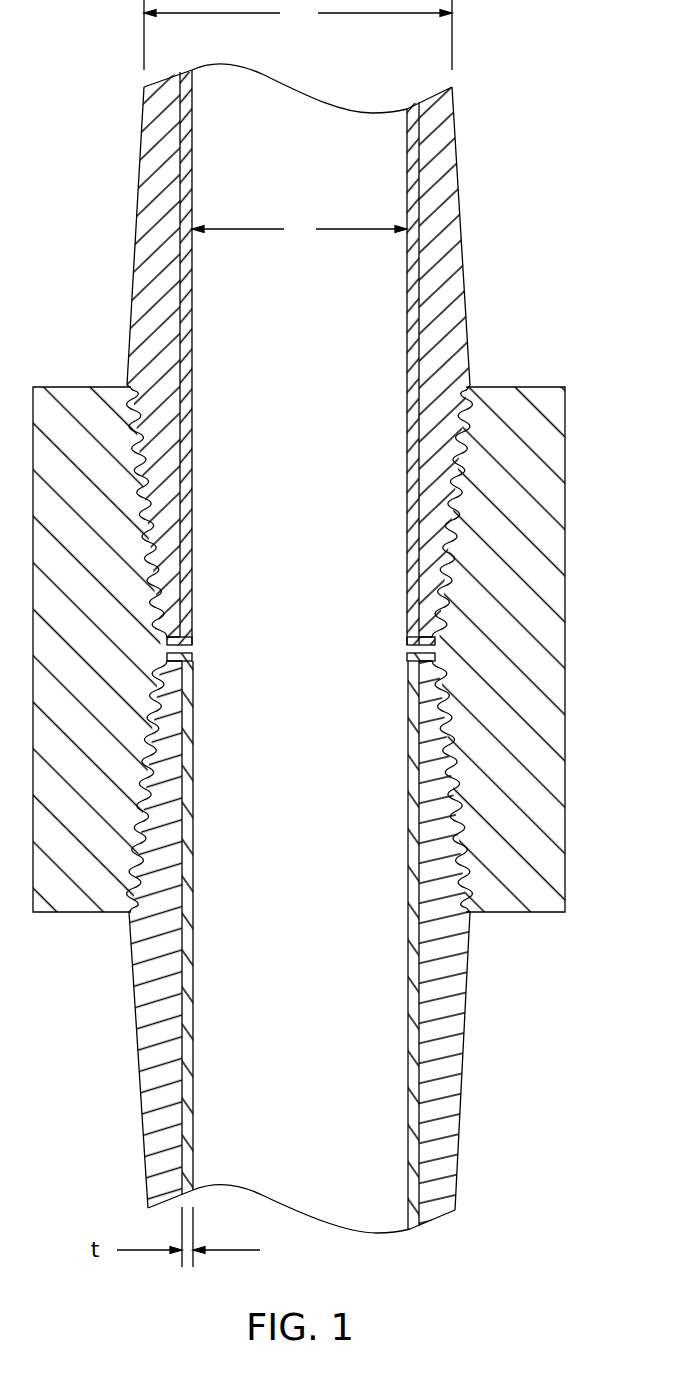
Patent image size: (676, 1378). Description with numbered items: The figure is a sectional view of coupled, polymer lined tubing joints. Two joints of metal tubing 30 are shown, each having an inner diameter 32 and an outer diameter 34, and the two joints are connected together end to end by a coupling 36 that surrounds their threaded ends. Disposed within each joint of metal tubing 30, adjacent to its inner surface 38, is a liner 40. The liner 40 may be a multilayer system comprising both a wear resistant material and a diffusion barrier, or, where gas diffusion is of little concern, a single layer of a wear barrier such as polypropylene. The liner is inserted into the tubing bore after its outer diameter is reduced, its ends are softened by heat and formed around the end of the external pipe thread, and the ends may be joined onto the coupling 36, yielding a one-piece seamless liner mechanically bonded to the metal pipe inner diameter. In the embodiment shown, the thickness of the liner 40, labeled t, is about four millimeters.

The metal tubing 30 is at (470, 323).
The inner diameter 32 is at (299, 229).
The outer diameter 34 is at (298, 35).
The coupling 36 is at (62, 387).
The inner surface 38 is at (192, 342).
The liner 40 is at (187, 425).